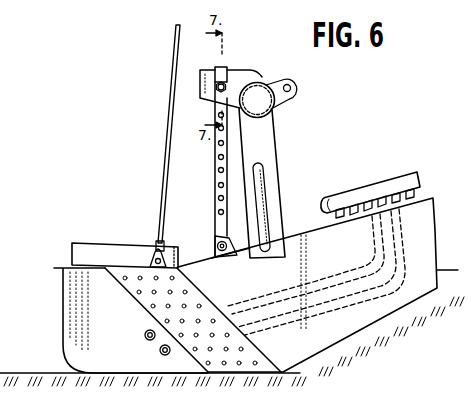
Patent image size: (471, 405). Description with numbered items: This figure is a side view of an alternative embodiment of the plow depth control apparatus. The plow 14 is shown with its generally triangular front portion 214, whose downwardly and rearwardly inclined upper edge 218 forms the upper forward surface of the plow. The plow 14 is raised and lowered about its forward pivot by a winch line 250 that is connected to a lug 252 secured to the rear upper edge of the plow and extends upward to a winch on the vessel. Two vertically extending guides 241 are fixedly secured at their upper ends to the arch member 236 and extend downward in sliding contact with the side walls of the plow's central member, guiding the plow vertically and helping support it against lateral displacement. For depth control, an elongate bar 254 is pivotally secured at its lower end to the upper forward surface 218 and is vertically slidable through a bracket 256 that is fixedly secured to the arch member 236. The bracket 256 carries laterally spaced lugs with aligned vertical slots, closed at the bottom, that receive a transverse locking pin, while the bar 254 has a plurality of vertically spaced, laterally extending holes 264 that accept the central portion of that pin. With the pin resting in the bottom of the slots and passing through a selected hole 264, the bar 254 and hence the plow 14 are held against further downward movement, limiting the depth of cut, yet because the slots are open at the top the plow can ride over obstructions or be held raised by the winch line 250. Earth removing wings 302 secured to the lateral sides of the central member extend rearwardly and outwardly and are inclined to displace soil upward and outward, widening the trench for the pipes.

The plow 14 is at (84, 286).
The generally triangular front portion 214 is at (342, 263).
The upper edge 218 is at (207, 262).
The arch member 236 is at (258, 82).
The vertically extending guides 241 is at (263, 146).
The winch line 250 is at (167, 137).
The lug 252 is at (156, 251).
The elongate bar 254 is at (215, 160).
The bracket 256 is at (241, 70).
The holes 264 is at (218, 185).
The earth removing wings 302 is at (148, 302).